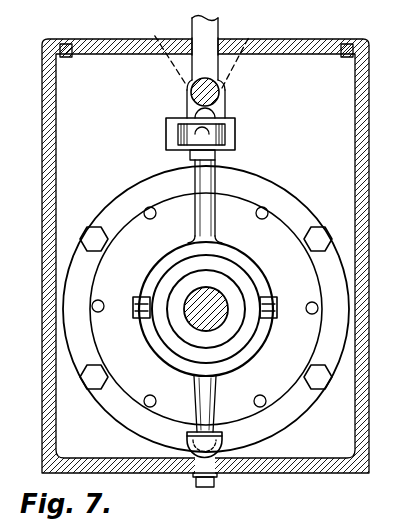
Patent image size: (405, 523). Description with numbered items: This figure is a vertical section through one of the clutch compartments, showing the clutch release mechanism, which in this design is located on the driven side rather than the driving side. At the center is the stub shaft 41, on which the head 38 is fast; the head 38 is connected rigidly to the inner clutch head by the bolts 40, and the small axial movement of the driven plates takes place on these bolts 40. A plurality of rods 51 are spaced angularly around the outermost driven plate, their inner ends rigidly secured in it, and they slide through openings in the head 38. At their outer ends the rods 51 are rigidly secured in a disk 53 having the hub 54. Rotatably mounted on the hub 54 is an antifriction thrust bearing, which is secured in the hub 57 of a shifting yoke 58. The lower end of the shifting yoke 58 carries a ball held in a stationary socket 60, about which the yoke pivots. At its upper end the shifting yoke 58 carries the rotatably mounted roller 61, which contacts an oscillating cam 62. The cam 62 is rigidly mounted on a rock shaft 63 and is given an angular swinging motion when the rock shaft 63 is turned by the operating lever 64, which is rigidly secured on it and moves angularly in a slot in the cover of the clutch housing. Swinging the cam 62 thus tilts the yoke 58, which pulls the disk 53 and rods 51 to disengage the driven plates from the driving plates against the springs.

The head 38 is at (296, 196).
The bolts 40 is at (320, 228).
The stub shaft 41 is at (212, 316).
The rods 51 is at (147, 219).
The disk 53 is at (233, 197).
The hub 54 is at (212, 275).
The hub of shifting yoke 57 is at (258, 273).
The shifting yoke 58 is at (210, 176).
The stationary socket 60 is at (222, 439).
The roller 61 is at (218, 131).
The oscillating cam 62 is at (236, 125).
The rock shaft 63 is at (220, 92).
The operating lever 64 is at (208, 30).